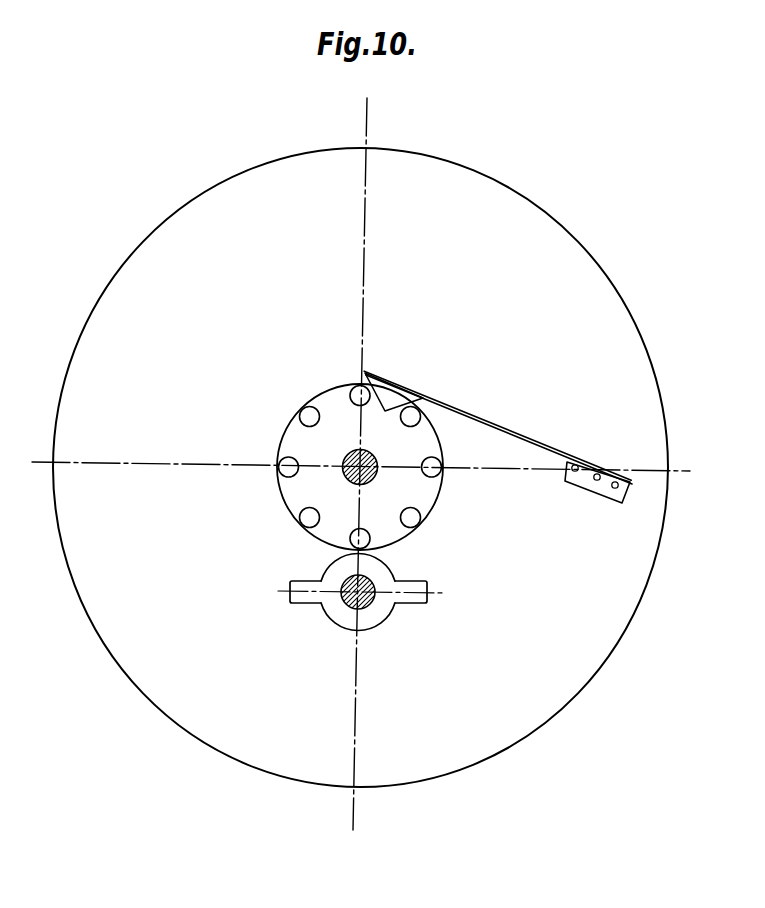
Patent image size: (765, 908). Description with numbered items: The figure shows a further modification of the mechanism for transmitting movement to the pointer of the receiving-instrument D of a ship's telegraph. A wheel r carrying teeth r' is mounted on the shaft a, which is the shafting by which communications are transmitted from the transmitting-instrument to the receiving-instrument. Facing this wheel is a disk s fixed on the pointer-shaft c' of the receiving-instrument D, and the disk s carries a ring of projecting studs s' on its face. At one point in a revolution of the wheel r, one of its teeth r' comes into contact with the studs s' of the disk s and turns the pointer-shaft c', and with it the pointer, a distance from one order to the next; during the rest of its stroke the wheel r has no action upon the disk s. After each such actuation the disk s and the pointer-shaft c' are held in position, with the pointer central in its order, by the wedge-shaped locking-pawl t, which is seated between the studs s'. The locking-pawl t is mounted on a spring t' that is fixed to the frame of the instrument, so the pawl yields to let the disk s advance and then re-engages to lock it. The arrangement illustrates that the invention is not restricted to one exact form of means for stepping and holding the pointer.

The receiving-instrument D is at (360, 467).
The disk s is at (364, 467).
The projecting studs s' is at (372, 467).
The pointer-shaft c' is at (333, 477).
The locking-pawl t is at (394, 384).
The spring t' is at (498, 437).
The wheel r is at (355, 593).
The teeth r' is at (367, 588).
The shaft a is at (370, 605).